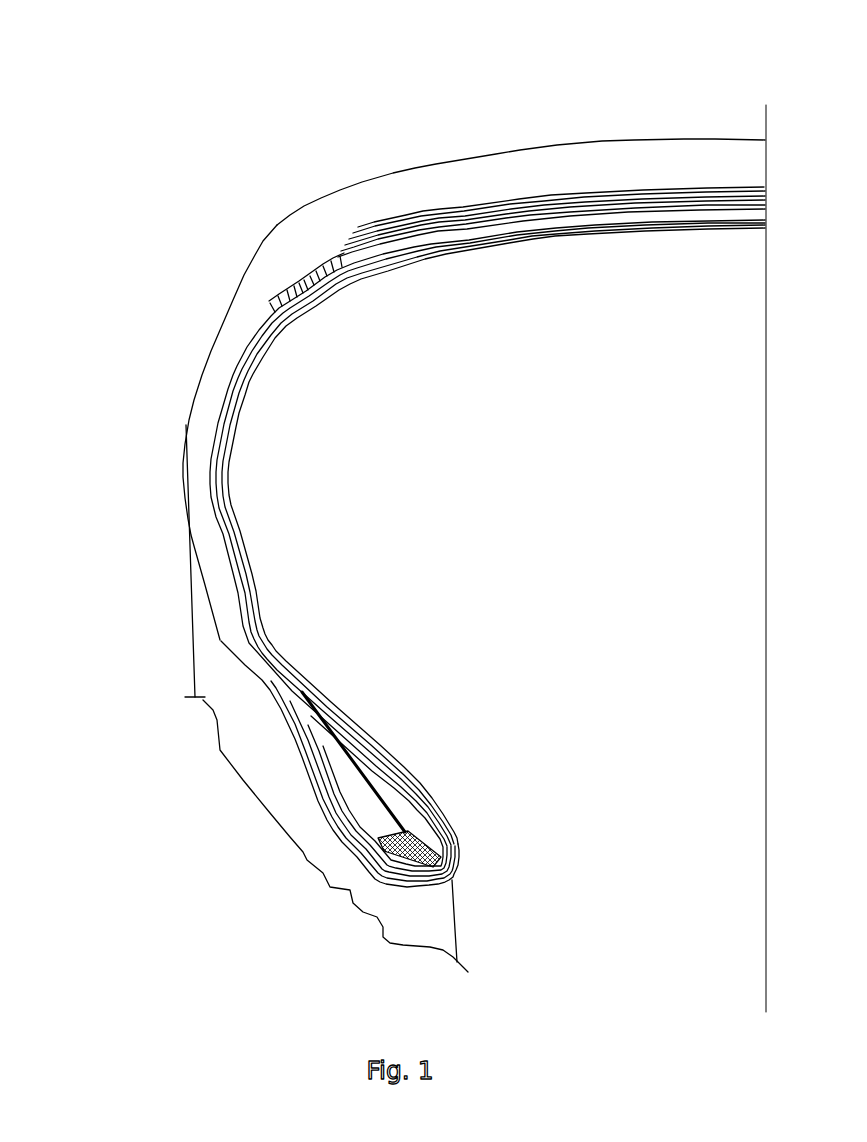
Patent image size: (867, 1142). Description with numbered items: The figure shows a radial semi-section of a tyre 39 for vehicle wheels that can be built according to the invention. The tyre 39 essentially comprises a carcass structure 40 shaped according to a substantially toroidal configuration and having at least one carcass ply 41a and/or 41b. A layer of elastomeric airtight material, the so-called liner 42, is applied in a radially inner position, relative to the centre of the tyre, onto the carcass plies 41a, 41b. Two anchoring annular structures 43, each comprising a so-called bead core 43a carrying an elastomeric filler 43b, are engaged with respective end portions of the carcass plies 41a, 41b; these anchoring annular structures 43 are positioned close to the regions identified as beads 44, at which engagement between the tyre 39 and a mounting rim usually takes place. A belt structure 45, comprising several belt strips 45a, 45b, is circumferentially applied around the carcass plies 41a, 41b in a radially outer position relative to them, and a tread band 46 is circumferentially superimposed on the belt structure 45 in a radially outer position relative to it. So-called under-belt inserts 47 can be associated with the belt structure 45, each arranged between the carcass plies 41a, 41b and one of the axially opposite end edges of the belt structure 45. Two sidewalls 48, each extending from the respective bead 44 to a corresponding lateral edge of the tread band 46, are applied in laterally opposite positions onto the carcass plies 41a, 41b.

The tyre 39 is at (147, 542).
The carcass structure 40 is at (210, 477).
The carcass ply 41a is at (280, 663).
The carcass ply 41b is at (258, 632).
The liner 42 is at (373, 273).
The anchoring annular structure 43 is at (378, 762).
The bead core 43a is at (450, 846).
The elastomeric filler 43b is at (378, 762).
The bead 44 is at (437, 795).
The belt structure 45 is at (722, 183).
The belt strip 45a is at (553, 197).
The belt strip 45b is at (588, 207).
The tread band 46 is at (643, 157).
The under-belt insert 47 is at (330, 253).
The sidewall 48 is at (197, 422).